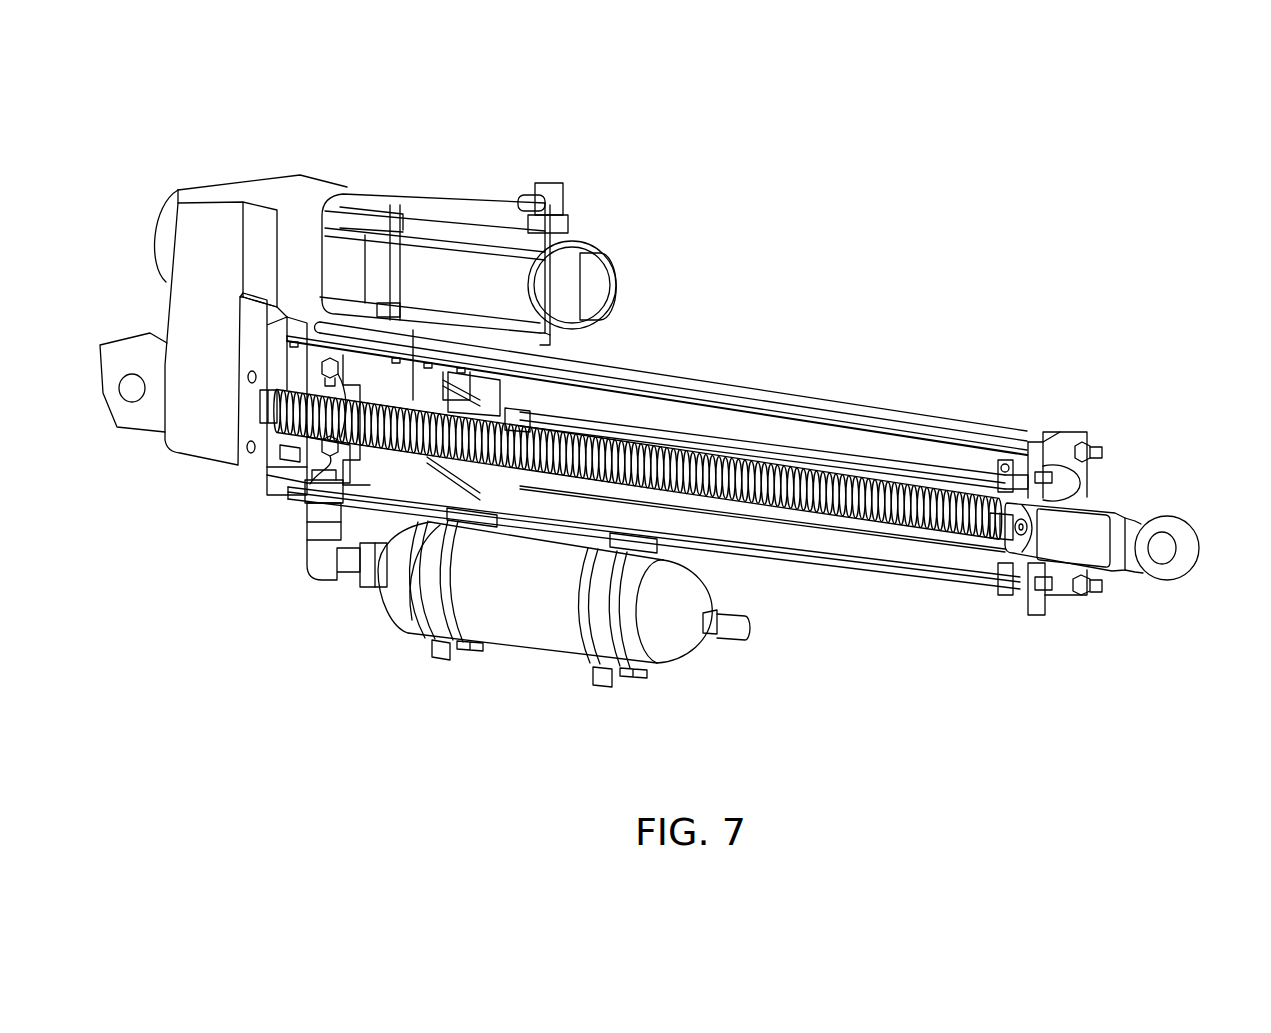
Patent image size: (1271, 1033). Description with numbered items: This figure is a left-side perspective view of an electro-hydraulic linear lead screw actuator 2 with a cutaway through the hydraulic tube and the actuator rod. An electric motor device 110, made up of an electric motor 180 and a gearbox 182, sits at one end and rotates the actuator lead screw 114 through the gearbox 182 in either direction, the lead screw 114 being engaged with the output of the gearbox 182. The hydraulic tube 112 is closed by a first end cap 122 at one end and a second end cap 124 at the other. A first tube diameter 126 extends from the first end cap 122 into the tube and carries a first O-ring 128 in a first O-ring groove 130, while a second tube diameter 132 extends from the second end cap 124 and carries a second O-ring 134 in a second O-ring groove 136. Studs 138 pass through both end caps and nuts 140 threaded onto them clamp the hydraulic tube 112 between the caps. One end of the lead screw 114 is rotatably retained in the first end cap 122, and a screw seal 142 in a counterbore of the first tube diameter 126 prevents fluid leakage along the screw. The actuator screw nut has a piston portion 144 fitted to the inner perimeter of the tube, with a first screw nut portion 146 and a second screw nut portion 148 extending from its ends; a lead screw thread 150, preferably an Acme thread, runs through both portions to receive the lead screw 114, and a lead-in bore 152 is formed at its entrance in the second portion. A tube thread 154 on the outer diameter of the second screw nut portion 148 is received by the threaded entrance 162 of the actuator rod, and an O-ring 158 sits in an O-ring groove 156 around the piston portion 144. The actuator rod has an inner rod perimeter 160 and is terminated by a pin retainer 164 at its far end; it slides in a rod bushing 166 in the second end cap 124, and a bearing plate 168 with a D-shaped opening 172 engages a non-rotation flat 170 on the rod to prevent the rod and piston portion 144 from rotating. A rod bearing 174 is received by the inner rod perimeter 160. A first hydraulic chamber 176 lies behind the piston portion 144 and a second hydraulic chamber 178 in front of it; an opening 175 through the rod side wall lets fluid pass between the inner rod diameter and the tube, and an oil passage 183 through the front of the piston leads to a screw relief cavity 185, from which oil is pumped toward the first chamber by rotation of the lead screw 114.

The electro-hydraulic linear lead screw actuator 2 is at (766, 203).
The electric motor device 110 is at (502, 163).
The hydraulic tube 112 is at (723, 555).
The actuator lead screw 114 is at (907, 527).
The first end cap 122 is at (290, 480).
The second end cap 124 is at (1032, 612).
The first tube diameter 126 is at (332, 480).
The first O-ring 128 is at (292, 473).
The first O-ring groove 130 is at (287, 453).
The second tube diameter 132 is at (1000, 448).
The second O-ring 134 is at (1020, 453).
The second O-ring groove 136 is at (1003, 462).
The studs 138 is at (1100, 447).
The nuts 140 is at (1090, 438).
The screw seal 142 is at (277, 387).
The piston portion 144 is at (400, 585).
The first screw nut portion 146 is at (350, 587).
The second screw nut portion 148 is at (490, 407).
The lead screw thread 150 is at (494, 510).
The lead-in bore 152 is at (519, 478).
The tube thread 154 is at (455, 392).
The O-ring groove 156 is at (513, 327).
The O-ring 158 is at (597, 250).
The inner rod perimeter 160 is at (1050, 552).
The threaded entrance 162 is at (527, 432).
The pin retainer 164 is at (1194, 527).
The rod bushing 166 is at (1023, 432).
The bearing plate 168 is at (1067, 488).
The non-rotation flat 170 is at (1113, 500).
The D-shaped opening 172 is at (1053, 470).
The rod bearing 174 is at (1030, 530).
The opening 175 is at (510, 412).
The first hydraulic chamber 176 is at (320, 565).
The second hydraulic chamber 178 is at (935, 570).
The electric motor 180 is at (360, 189).
The gearbox 182 is at (220, 182).
The oil passage 183 is at (452, 392).
The screw relief cavity 185 is at (402, 392).